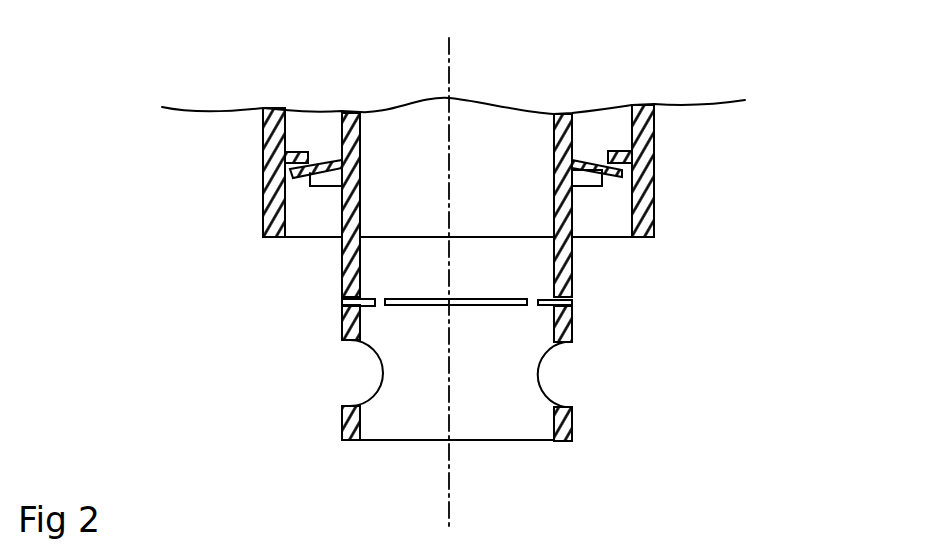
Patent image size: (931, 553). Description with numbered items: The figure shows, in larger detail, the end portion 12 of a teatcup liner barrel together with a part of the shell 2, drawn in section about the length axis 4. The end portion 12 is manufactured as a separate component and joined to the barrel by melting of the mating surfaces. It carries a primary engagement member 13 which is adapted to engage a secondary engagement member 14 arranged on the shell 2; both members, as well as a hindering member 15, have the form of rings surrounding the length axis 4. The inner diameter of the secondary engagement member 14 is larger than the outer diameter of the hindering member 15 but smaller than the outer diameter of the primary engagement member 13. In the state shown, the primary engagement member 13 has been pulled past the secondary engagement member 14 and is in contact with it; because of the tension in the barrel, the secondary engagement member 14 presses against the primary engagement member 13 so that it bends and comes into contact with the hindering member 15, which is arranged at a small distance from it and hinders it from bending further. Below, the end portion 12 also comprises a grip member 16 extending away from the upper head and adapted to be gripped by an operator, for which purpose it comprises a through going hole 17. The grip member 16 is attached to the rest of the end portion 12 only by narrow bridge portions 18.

The shell 2 is at (263, 137).
The length axis 4 is at (449, 40).
The end portion 12 is at (572, 140).
The primary engagement member 13 is at (300, 173).
The secondary engagement member 14 is at (292, 160).
The hindering member 15 is at (602, 183).
The grip member 16 is at (572, 427).
The through going hole 17 is at (298, 373).
The bridge portions 18 is at (533, 302).